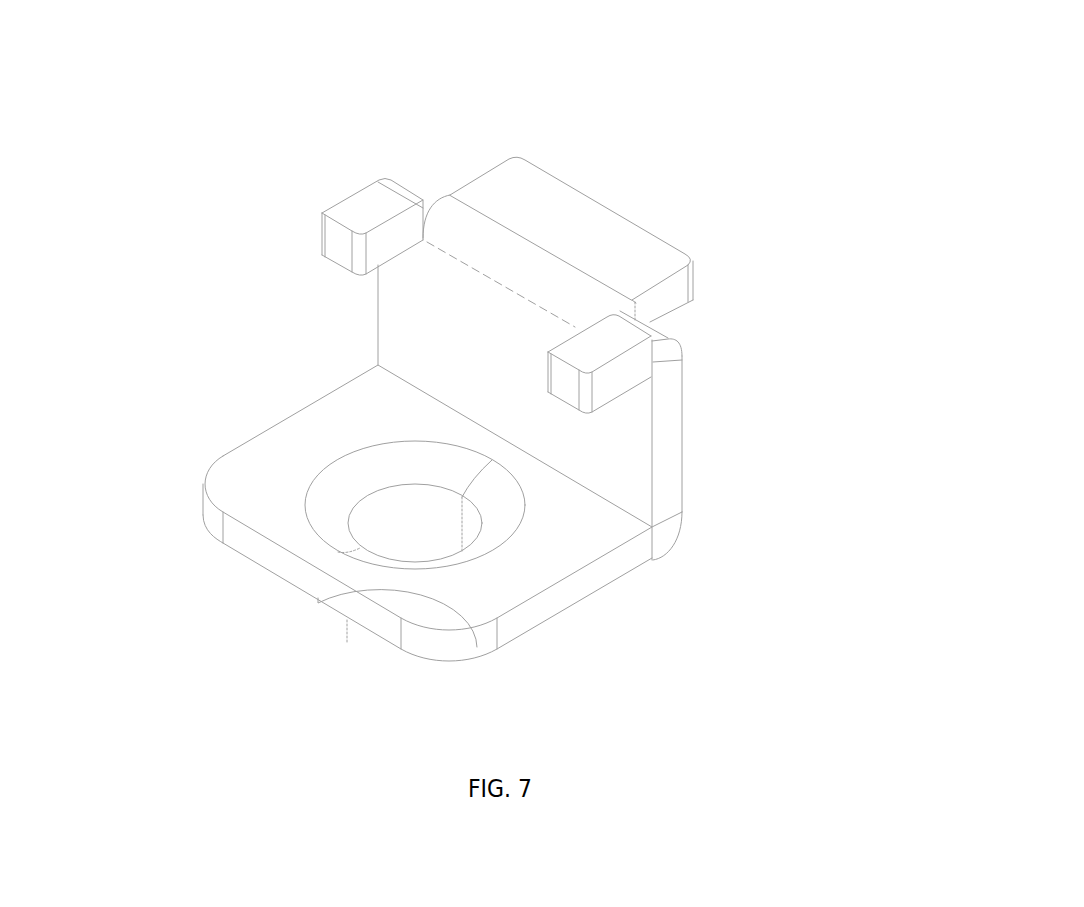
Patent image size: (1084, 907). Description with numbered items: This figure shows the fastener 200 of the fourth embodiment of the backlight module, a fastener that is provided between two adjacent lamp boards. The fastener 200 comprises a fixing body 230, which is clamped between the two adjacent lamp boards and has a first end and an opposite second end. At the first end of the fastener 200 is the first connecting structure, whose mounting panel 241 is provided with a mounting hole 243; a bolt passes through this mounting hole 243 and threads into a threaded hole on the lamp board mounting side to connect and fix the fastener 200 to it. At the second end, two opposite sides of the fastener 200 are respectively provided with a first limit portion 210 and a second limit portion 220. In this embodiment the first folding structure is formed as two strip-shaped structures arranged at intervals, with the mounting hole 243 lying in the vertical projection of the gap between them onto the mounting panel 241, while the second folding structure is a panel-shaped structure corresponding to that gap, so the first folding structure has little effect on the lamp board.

The fastener 200 is at (518, 313).
The first limit portion 210 is at (367, 222).
The second limit portion 220 is at (602, 238).
The fixing body 230 is at (653, 452).
The mounting panel 241 is at (290, 465).
The mounting hole 243 is at (410, 528).